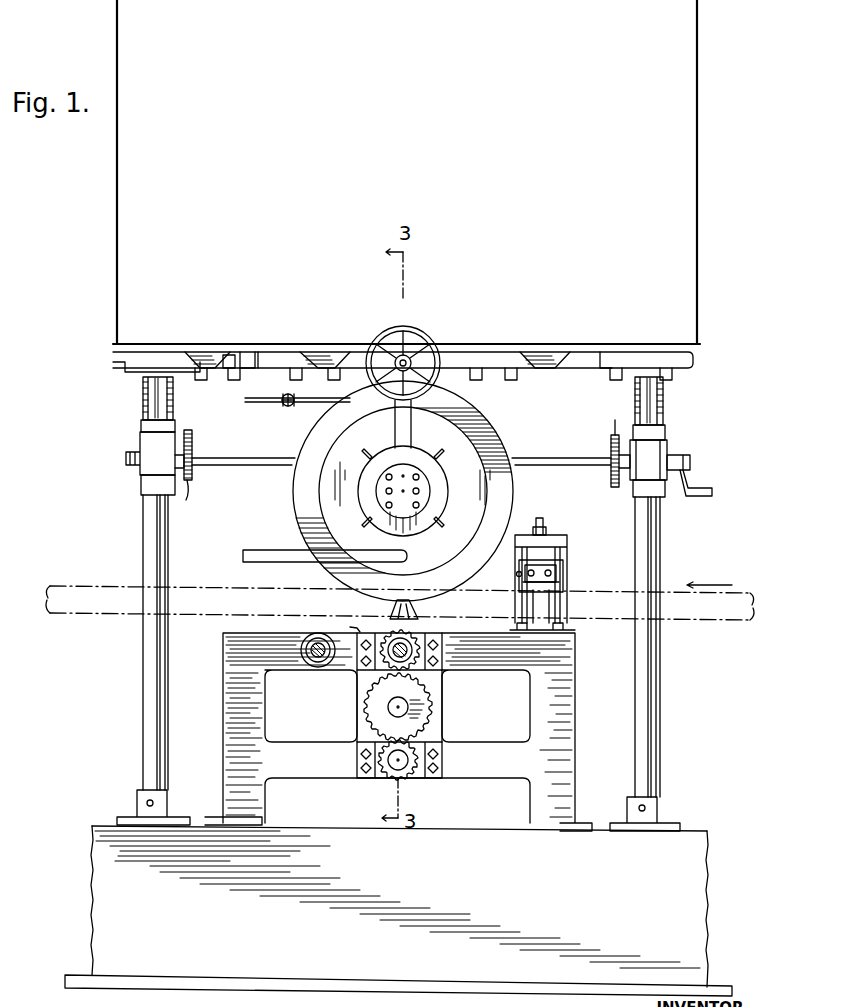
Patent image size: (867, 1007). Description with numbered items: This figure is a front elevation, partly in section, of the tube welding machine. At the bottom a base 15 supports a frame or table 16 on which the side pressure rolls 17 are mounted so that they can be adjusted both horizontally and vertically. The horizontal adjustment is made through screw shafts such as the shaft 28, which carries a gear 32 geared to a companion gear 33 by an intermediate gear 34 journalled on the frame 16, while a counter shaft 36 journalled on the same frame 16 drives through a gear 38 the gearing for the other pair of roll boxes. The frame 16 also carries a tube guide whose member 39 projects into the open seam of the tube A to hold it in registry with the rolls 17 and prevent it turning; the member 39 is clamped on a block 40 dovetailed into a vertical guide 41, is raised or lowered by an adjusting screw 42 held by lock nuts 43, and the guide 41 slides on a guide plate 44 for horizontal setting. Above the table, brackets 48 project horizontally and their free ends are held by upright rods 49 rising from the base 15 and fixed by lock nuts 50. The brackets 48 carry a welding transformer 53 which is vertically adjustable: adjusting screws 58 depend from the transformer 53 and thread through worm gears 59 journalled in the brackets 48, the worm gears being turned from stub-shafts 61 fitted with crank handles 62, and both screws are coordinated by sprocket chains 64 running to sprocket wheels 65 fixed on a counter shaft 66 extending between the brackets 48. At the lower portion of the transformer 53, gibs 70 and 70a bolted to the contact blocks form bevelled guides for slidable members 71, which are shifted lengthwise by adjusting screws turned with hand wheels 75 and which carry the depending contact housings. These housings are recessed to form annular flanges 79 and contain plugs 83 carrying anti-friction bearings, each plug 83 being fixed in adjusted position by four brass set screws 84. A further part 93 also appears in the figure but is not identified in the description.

The transformer 53 is at (697, 160).
The slidable members 71 is at (470, 352).
The gibs 70 is at (518, 372).
The gibs 70a is at (282, 365).
The hand wheels 75 is at (422, 345).
The annular flanges 79 is at (513, 495).
The plugs 83 is at (425, 488).
The brass set screws 84 is at (366, 450).
The rod 93 is at (300, 403).
The side pressure rolls 17 is at (415, 612).
The counter shaft 66 is at (545, 458).
The adjusting screws 58 is at (143, 395).
The lock nuts 50 is at (141, 432).
The worm gears 59 is at (126, 458).
The sprocket chain 64 is at (192, 445).
The sprocket wheel 65 is at (405, 454).
The brackets 48 is at (667, 450).
The stub-shafts 61 is at (690, 462).
The crank handles 62 is at (712, 490).
The upright rods 49 is at (143, 555).
The tube A is at (190, 587).
The guide plate 44 is at (570, 630).
The vertical guide 41 is at (563, 580).
The adjusting screw 42 is at (556, 560).
The lock nuts 43 is at (543, 530).
The block 40 is at (516, 574).
The tube guide member 39 is at (552, 592).
The frame or table 16 is at (223, 668).
The counter shaft 36 is at (318, 640).
The gear 38 is at (355, 662).
The shaft 28 is at (440, 635).
The gear 32 is at (407, 706).
The gear 34 is at (375, 706).
The gear 33 is at (440, 748).
The base 15 is at (398, 911).